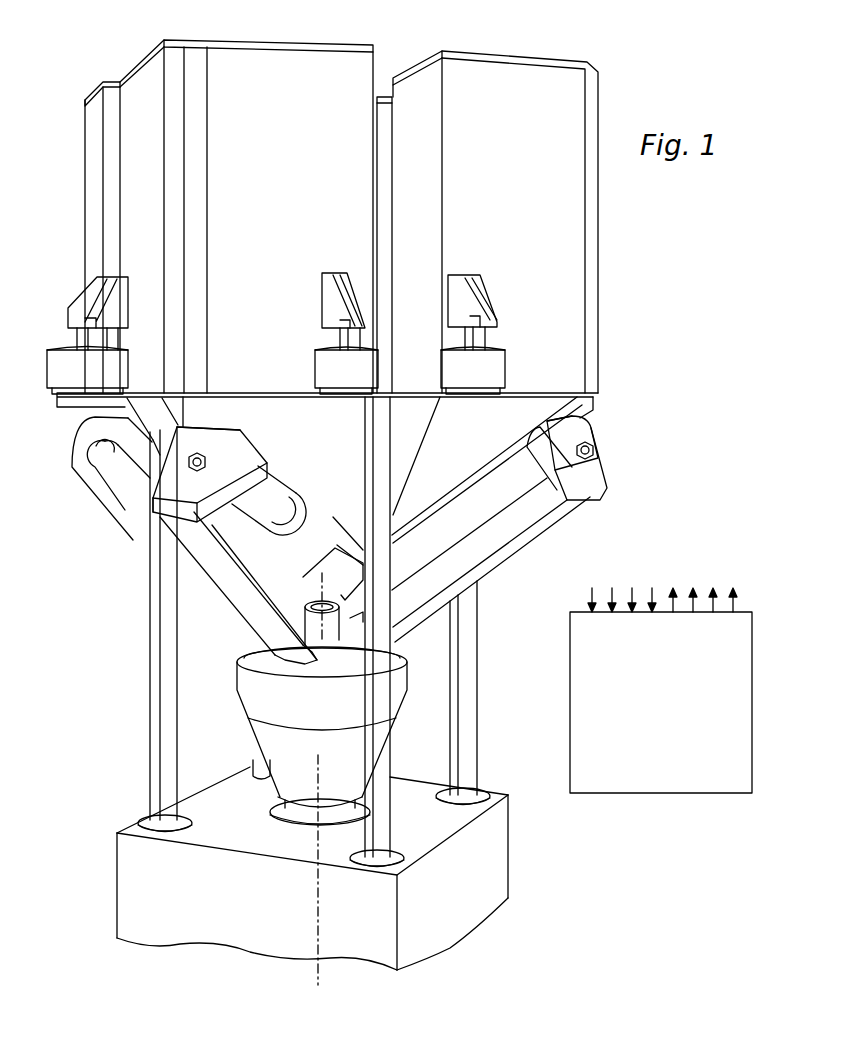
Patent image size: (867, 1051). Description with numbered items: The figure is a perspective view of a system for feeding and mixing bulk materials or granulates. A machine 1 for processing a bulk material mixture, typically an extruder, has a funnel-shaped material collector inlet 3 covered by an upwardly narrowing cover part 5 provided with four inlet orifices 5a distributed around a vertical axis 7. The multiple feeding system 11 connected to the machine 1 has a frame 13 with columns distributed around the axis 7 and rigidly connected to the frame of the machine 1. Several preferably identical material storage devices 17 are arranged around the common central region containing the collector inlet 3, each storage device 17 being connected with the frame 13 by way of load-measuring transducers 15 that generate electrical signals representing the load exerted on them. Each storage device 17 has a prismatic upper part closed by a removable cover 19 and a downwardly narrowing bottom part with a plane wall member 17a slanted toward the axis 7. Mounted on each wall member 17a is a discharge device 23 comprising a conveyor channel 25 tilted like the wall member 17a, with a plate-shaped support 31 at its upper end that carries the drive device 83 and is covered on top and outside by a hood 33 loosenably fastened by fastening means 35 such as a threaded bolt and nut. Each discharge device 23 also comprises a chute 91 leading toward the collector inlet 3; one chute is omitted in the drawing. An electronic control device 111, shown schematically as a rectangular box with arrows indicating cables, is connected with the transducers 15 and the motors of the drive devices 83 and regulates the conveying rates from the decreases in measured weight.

The machine 1 is at (123, 868).
The material collector inlet 3 is at (238, 697).
The cover part 5 is at (327, 603).
The inlet orifices 5a is at (288, 655).
The vertical axis 7 is at (318, 968).
The feeding system 11 is at (83, 193).
The frame 13 is at (165, 694).
The load-measuring transducers 15 is at (70, 360).
The material storage devices 17 is at (137, 80).
The plane wall member 17a is at (225, 407).
The removable cover 19 is at (560, 62).
The discharge device 23 is at (72, 440).
The conveyor channel 25 is at (488, 500).
The plate-shaped support 31 is at (257, 485).
The hood 33 is at (221, 438).
The fastening means 35 is at (210, 462).
The drive device 83 is at (145, 497).
The chute 91 is at (258, 615).
The electronic control device 111 is at (641, 795).